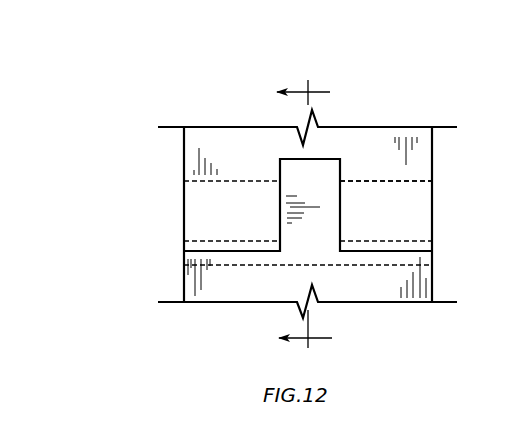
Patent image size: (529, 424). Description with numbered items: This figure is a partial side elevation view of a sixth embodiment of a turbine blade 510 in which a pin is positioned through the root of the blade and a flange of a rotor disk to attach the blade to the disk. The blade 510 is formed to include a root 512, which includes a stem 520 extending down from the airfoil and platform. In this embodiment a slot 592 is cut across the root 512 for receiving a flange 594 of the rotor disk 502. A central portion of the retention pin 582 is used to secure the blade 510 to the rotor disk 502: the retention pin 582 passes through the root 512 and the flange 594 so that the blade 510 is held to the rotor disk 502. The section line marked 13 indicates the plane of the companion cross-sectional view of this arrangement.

The turbine blade 510 is at (174, 67).
The root 512 is at (137, 108).
The stem 520 is at (182, 163).
The slot 592 is at (343, 208).
The flange 594 is at (283, 207).
The retention pin 582 is at (406, 212).
The rotor disk 502 is at (435, 287).
The section line 13 is at (317, 215).